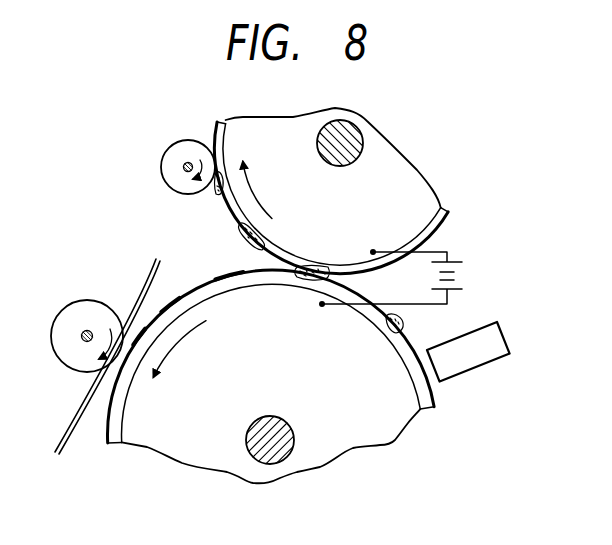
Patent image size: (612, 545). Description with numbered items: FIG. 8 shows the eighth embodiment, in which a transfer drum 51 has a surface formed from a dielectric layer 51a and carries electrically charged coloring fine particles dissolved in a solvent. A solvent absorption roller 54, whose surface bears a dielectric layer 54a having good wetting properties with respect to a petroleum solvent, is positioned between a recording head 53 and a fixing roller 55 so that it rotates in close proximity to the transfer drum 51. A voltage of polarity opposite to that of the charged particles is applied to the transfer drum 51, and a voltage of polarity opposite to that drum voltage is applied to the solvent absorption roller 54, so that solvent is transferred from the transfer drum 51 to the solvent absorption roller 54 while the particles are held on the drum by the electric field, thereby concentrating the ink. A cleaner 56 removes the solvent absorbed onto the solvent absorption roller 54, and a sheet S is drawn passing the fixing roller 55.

The transfer drum 51 is at (185, 454).
The dielectric layer 51a is at (278, 287).
The recording head 53 is at (477, 362).
The solvent absorption roller 54 is at (403, 173).
The dielectric layer 54a is at (322, 263).
The fixing roller 55 is at (72, 315).
The cleaner 56 is at (165, 167).
The recording sheet S is at (149, 272).